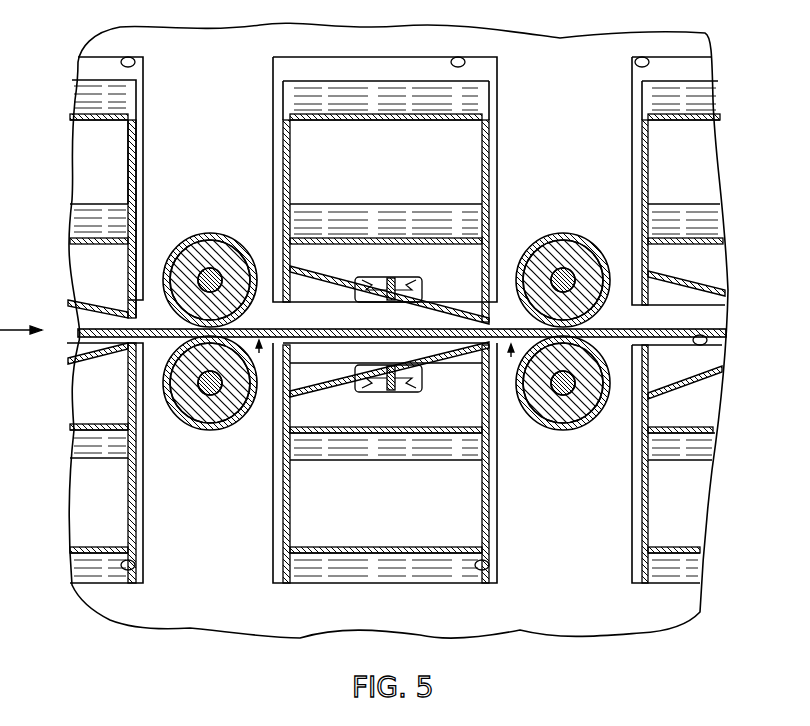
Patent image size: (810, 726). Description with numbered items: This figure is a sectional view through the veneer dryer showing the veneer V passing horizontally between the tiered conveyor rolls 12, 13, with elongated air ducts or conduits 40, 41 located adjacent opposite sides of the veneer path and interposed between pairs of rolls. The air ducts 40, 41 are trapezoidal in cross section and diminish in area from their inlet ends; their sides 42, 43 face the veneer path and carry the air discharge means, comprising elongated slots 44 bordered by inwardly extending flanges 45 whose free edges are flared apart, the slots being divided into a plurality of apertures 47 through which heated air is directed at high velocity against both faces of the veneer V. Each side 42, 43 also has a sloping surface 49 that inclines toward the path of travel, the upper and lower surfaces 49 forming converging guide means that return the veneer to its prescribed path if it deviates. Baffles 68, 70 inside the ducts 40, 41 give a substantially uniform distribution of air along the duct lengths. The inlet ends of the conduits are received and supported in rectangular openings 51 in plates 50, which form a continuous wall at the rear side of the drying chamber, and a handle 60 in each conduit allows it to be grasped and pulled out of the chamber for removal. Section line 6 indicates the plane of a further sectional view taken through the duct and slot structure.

The plate 50 is at (398, 330).
The veneer V is at (726, 333).
The air duct 40 is at (135, 160).
The air duct 41 is at (135, 520).
The baffle 68 is at (118, 222).
The baffle 70 is at (118, 446).
The upper roller 12 is at (178, 252).
The lower roller 13 is at (180, 414).
The sloping surface 49 is at (80, 292).
The aperture 47 is at (292, 306).
The side 42 is at (706, 283).
The side 43 is at (340, 375).
The flange 45 is at (358, 288).
The slot 44 is at (392, 278).
The handle 60 is at (377, 282).
The section line 6 is at (386, 358).
The opening 51 is at (134, 60).